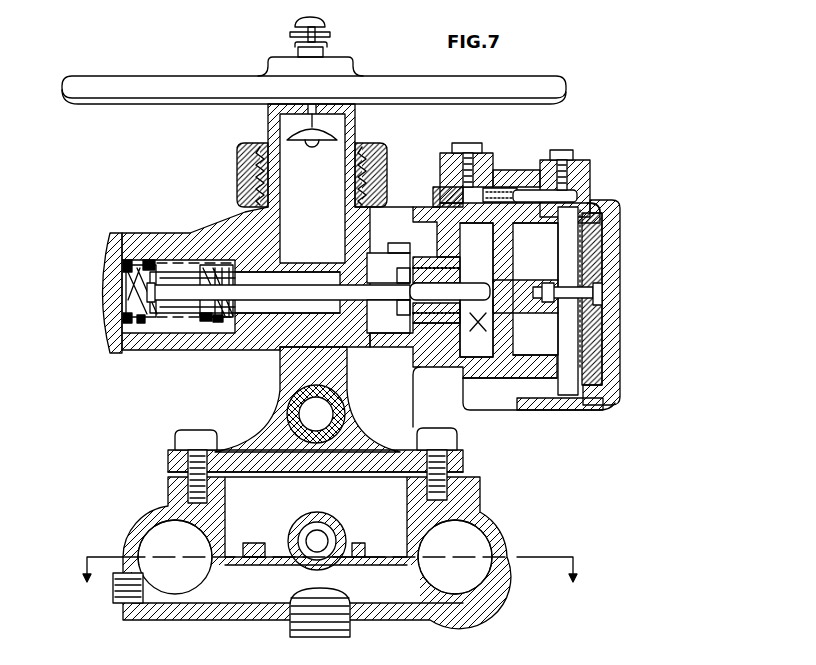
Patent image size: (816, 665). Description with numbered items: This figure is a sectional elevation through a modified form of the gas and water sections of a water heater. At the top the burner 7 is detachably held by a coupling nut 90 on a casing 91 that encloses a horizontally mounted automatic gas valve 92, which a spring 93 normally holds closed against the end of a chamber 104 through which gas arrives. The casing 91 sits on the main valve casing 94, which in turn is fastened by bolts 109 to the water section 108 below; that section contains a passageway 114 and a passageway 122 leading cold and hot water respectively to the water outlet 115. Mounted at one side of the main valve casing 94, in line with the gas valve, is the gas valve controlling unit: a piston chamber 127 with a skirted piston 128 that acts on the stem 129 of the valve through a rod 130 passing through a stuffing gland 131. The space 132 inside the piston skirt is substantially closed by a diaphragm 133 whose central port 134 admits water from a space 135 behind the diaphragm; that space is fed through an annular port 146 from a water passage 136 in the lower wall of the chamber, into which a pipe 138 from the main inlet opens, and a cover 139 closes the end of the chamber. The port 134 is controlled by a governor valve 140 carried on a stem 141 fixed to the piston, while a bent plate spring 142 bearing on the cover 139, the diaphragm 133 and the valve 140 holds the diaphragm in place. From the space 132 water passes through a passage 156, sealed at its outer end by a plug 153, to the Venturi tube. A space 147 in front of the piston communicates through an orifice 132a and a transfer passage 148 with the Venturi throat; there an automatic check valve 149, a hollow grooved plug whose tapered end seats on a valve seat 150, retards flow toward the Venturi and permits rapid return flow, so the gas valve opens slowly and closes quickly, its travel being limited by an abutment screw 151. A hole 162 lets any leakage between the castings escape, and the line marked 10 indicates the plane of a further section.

The burner 7 is at (560, 86).
The coupling nut 90 is at (247, 160).
The casing 91 is at (357, 222).
The automatic gas valve 92 is at (230, 323).
The spring 93 is at (117, 272).
The main valve casing 94 is at (343, 370).
The chamber 104 is at (267, 307).
The water section 108 is at (463, 498).
The bolts 109 is at (193, 434).
The passageway 114 is at (407, 591).
The water outlet 115 is at (284, 626).
The passageway 122 is at (203, 596).
The piston chamber 127 is at (484, 376).
The piston 128 is at (503, 245).
The stem 129 is at (293, 293).
The rod 130 is at (465, 290).
The stuffing gland 131 is at (435, 268).
The space 132 is at (535, 334).
The orifice 132a is at (440, 201).
The diaphragm 133 is at (578, 350).
The central port 134 is at (581, 283).
The space 135 is at (594, 323).
The water passage 136 is at (607, 409).
The pipe 138 is at (432, 405).
The cover 139 is at (620, 216).
The governor valve 140 is at (602, 297).
The stem 141 is at (570, 263).
The bent plate spring 142 is at (588, 358).
The annular port 146 is at (584, 392).
The space 147 is at (478, 328).
The transfer passage 148 is at (530, 160).
The automatic check valve 149 is at (495, 188).
The valve seat 150 is at (548, 195).
The abutment screw 151 is at (432, 192).
The plug 153 is at (577, 153).
The passage 156 is at (593, 200).
The holes 162 is at (405, 252).
The section line 10- 10 is at (326, 582).